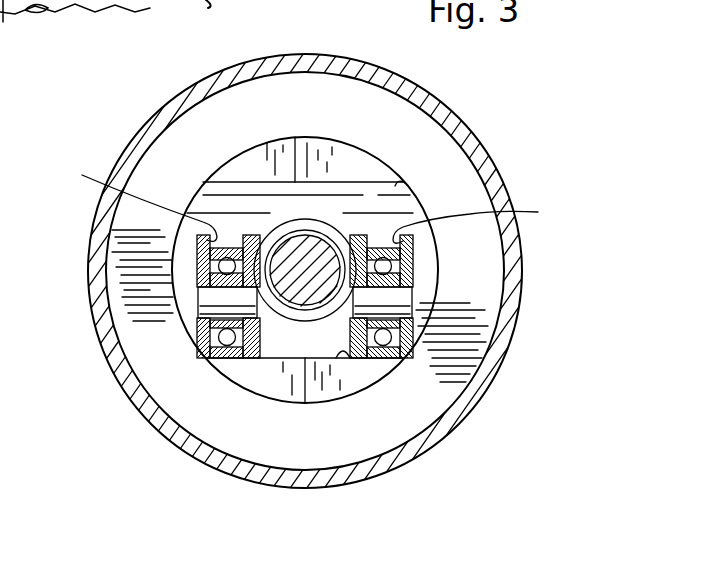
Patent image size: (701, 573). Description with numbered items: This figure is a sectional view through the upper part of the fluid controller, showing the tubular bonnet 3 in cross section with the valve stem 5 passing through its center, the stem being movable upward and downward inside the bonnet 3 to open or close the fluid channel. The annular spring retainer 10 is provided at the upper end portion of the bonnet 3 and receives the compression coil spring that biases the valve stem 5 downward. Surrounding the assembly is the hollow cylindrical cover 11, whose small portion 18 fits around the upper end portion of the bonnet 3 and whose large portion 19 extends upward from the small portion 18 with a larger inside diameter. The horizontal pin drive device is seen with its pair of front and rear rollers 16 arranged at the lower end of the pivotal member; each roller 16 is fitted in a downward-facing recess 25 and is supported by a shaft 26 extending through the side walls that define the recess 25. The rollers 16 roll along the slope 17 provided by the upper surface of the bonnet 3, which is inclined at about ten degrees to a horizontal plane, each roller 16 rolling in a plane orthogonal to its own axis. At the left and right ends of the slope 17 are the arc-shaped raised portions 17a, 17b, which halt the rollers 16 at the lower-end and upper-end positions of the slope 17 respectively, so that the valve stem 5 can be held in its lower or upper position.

The tubular bonnet 3 is at (314, 383).
The valve stem 5 is at (312, 288).
The annular spring retainer 10 is at (288, 313).
The cover 11 is at (590, 308).
The rollers 16 is at (205, 360).
The slope 17 is at (258, 347).
The raised portion 17a is at (400, 185).
The raised portion 17b is at (343, 353).
The small portion 18 is at (402, 410).
The large portion 19 is at (498, 350).
The recesses 25 is at (310, 203).
The shaft 26 is at (207, 302).